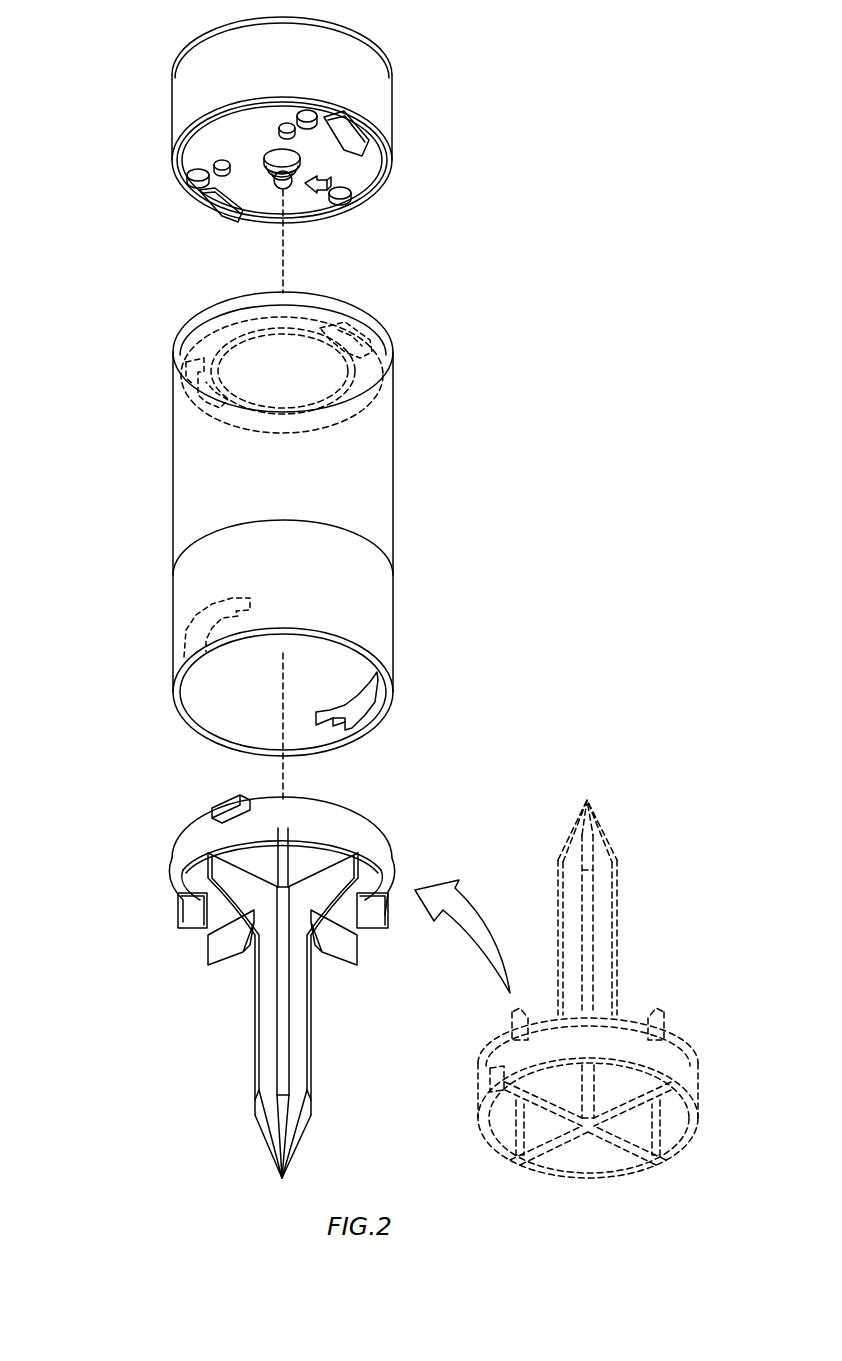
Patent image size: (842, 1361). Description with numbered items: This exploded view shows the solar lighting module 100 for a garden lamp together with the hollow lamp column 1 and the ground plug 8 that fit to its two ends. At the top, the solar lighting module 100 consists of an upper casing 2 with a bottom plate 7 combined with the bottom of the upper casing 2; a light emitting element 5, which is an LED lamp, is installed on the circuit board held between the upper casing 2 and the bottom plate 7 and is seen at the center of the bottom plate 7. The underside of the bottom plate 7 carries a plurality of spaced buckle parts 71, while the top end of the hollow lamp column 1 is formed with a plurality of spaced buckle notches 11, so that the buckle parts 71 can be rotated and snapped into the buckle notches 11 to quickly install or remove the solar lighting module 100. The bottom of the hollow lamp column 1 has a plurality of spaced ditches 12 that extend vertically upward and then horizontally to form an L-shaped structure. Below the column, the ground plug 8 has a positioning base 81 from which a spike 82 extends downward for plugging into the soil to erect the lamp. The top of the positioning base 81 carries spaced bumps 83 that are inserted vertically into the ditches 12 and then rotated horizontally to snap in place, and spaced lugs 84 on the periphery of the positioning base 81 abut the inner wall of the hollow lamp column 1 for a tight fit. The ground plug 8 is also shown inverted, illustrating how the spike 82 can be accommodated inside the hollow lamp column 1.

The solar lighting module 100 is at (145, 117).
The hollow lamp column 1 is at (372, 470).
The upper casing 2 is at (368, 107).
The light emitting element 5 is at (285, 187).
The bottom plate 7 is at (356, 178).
The buckle part 71 is at (358, 147).
The buckle notch 11 is at (190, 322).
The ditch 12 is at (186, 641).
The ground plug 8 is at (152, 924).
The positioning base 81 is at (196, 846).
The spike 82 is at (262, 1030).
The bump 83 is at (228, 807).
The lug 84 is at (190, 918).